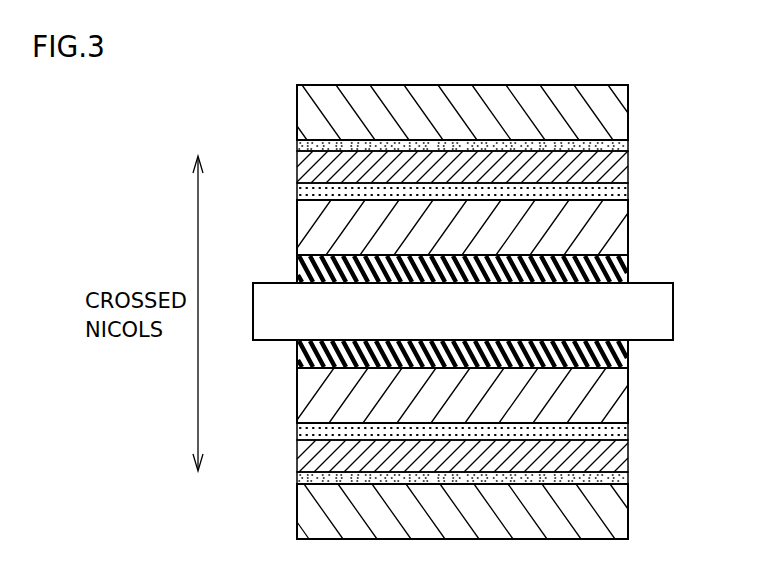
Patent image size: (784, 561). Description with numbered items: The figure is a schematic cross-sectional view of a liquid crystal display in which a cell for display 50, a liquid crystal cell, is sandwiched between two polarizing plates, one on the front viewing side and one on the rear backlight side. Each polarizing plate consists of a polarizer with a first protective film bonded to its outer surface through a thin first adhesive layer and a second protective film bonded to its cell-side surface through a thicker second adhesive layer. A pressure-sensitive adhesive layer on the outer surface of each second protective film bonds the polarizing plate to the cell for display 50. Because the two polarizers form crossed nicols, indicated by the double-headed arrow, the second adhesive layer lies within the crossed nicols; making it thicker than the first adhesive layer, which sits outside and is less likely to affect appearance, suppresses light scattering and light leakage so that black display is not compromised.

The cell for display 50 is at (655, 311).